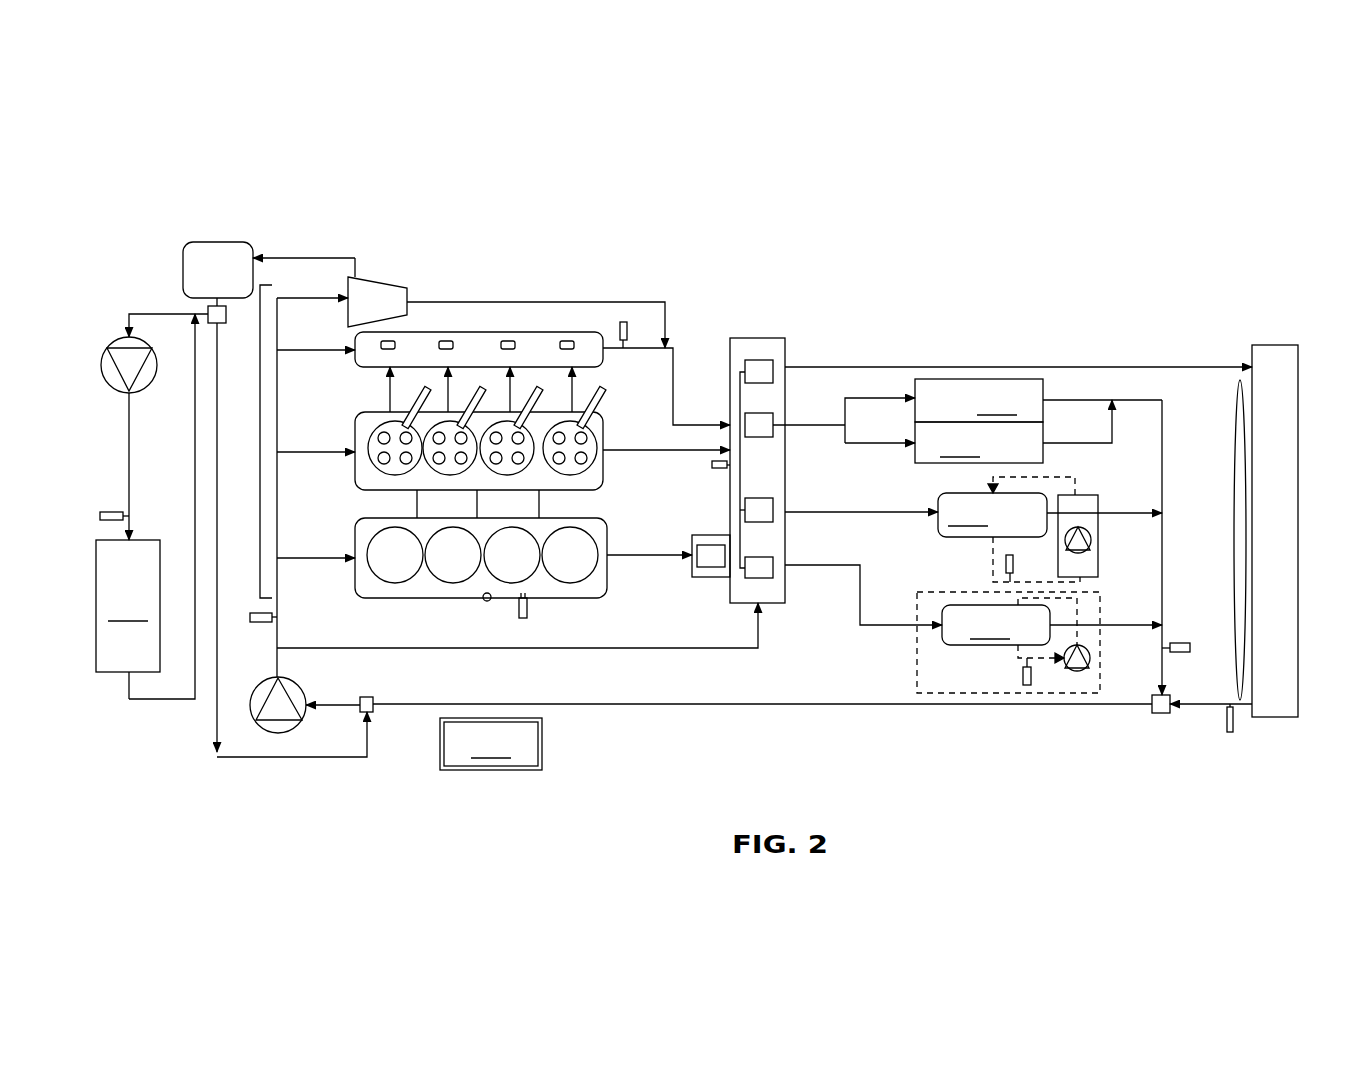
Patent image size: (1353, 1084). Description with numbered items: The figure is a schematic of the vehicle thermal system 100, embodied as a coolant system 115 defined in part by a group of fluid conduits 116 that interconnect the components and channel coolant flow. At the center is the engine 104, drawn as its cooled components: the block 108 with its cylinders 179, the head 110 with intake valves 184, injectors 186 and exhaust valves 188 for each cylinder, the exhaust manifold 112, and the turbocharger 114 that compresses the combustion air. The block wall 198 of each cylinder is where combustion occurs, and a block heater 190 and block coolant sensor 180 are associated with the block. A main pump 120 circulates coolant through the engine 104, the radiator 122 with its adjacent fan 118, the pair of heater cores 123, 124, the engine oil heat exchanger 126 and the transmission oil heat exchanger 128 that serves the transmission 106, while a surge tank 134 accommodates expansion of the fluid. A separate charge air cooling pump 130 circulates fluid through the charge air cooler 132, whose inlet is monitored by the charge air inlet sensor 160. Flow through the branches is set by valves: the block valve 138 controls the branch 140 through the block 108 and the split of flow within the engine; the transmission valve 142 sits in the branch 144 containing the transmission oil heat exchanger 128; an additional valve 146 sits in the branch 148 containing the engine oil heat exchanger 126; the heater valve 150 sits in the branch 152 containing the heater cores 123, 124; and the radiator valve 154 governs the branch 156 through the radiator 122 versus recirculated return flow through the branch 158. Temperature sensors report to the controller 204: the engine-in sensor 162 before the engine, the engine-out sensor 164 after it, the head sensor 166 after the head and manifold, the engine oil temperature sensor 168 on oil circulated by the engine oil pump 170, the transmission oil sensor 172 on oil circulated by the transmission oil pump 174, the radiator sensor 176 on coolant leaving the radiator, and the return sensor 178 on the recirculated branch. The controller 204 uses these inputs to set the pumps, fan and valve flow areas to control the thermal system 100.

The thermal system 100 is at (525, 248).
The engine 104 is at (260, 442).
The transmission 106 is at (1095, 600).
The block 108 is at (486, 575).
The head 110 is at (485, 457).
The exhaust manifold 112 is at (503, 332).
The turbocharger 114 is at (368, 277).
The coolant system 115 is at (1265, 332).
The fluid conduits 116 is at (815, 363).
The fan 118 is at (1235, 476).
The pump 120 is at (251, 706).
The radiator 122 is at (1298, 456).
The heater core 123 is at (979, 400).
The heater core 124 is at (979, 442).
The engine oil heat exchanger 126 is at (992, 515).
The transmission oil heat exchanger 128 is at (996, 625).
The charge air cooling pump 130 is at (102, 353).
The charge air cooler 132 is at (128, 606).
The surge tank 134 is at (208, 242).
The block valve 138 is at (717, 568).
The branch 140 is at (673, 553).
The transmission valve 142 is at (775, 568).
The branch 144 is at (862, 607).
The additional valve 146 is at (775, 516).
The branch 148 is at (850, 512).
The heater valve 150 is at (775, 428).
The branch 152 is at (832, 426).
The radiator valve 154 is at (784, 462).
The branch 156 is at (1165, 366).
The branch 158 is at (1165, 586).
The charge air inlet sensor 160 is at (100, 516).
The engine-in sensor 162 is at (250, 615).
The engine-out sensor 164 is at (724, 468).
The head sensor 166 is at (626, 322).
The engine oil temperature sensor 168 is at (1006, 563).
The engine oil pump 170 is at (1092, 535).
The transmission oil sensor 172 is at (1032, 674).
The transmission oil pump 174 is at (1090, 661).
The radiator sensor 176 is at (1227, 716).
The return sensor 178 is at (1190, 648).
The cylinders 179 is at (432, 574).
The block coolant sensor 180 is at (528, 608).
The intake valves 184 is at (379, 461).
The injector 186 is at (601, 392).
The exhaust valves 188 is at (381, 434).
The block heater 190 is at (490, 604).
The block wall 198 is at (360, 566).
The controller 204 is at (491, 744).